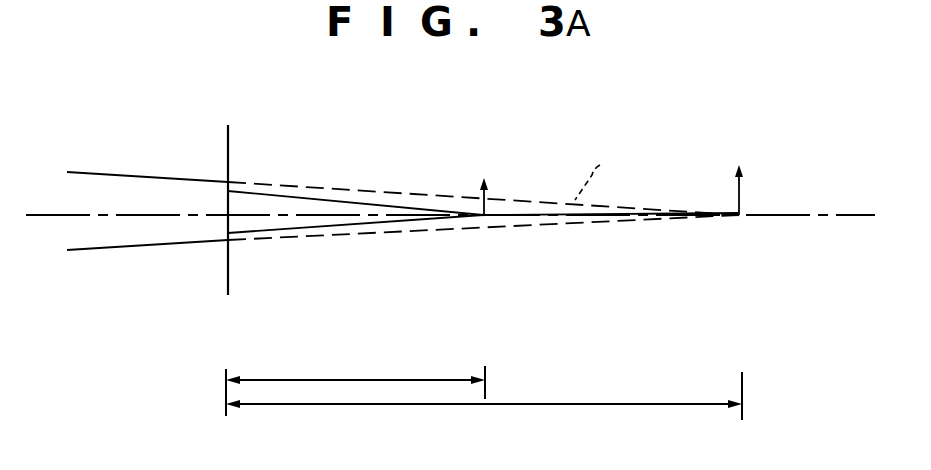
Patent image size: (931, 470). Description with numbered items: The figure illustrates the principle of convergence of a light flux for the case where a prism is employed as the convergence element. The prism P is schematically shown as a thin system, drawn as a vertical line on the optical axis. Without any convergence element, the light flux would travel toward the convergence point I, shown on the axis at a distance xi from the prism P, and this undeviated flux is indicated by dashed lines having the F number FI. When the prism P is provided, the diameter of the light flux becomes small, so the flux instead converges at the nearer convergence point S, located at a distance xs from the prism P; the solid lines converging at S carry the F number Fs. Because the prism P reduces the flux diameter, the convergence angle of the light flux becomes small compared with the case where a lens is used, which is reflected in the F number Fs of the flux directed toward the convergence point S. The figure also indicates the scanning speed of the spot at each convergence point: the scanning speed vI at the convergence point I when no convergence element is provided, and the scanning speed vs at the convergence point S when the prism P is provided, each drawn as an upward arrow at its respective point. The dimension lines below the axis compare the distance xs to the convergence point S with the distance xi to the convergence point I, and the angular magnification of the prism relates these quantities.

The prism P is at (229, 136).
The F number of the light flux directing toward the convergence point S Fs is at (370, 204).
The scanning speed when the prism is provided vs is at (493, 184).
The convergence point S is at (487, 218).
The F number of the light flux directing toward the convergence point I FI is at (599, 175).
The scanning speed of a spot at the converged point I vI is at (751, 190).
The convergence point I is at (742, 218).
The distance to the convergence point S xs is at (355, 382).
The distance to the convergence point I xi is at (484, 408).